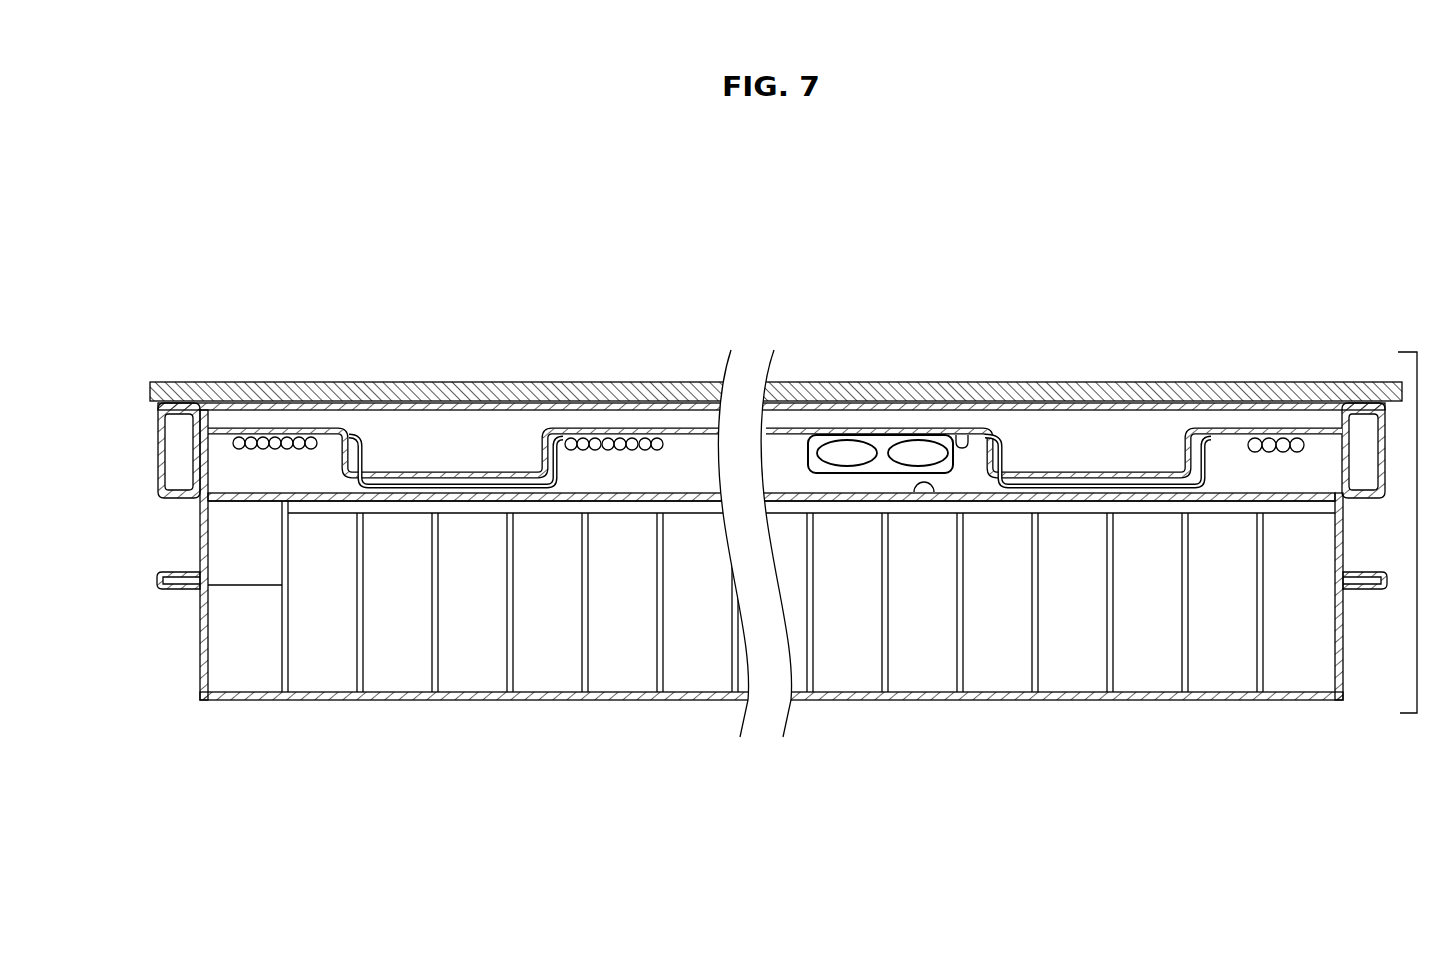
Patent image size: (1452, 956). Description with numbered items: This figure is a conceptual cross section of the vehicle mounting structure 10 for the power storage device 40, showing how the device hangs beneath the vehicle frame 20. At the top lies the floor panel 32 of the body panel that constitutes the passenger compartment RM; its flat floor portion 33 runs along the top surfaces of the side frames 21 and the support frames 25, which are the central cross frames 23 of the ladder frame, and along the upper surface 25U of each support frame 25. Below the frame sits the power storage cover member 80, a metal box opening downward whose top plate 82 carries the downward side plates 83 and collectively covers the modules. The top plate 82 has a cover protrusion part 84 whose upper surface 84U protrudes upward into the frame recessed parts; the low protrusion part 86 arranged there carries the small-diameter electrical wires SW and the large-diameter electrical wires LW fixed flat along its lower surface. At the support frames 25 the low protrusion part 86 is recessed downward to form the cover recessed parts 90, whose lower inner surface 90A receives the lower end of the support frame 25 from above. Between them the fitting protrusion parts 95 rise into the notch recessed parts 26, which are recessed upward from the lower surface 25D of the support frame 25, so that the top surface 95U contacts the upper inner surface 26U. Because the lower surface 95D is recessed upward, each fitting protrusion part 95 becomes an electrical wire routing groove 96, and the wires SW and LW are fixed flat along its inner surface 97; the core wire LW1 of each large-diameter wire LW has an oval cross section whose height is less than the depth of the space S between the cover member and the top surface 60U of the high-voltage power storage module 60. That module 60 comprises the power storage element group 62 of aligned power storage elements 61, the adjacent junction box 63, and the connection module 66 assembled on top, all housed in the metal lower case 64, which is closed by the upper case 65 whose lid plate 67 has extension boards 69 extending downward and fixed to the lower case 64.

The vehicle mounting structure 10 is at (1422, 532).
The vehicle frame 20 is at (139, 457).
The side frame 21 is at (160, 452).
The cross frame 23 is at (731, 368).
The support frame 25 is at (353, 403).
The upper surface of support frame 25U is at (620, 402).
The lower surface of support frame 25D is at (413, 480).
The notch recessed part 26 is at (557, 453).
The upper inner surface of notch recessed part 26U is at (972, 437).
The floor panel 32 is at (776, 345).
The floor portion 33 is at (470, 382).
The power storage device 40 is at (226, 714).
The high-voltage power storage module 60 is at (736, 610).
The top surface of high-voltage power storage module 60U is at (934, 492).
The power storage element 61 is at (1013, 662).
The power storage element group 62 is at (772, 643).
The junction box 63 is at (248, 657).
The lower case 64 is at (1243, 697).
The upper case 65 is at (227, 463).
The connection module 66 is at (842, 508).
The lid plate 67 is at (1222, 493).
The extension board 69 is at (213, 543).
The power storage cover member 80 is at (191, 525).
The top plate 82 is at (693, 430).
The side plate 83 is at (195, 538).
The cover protrusion part 84 is at (830, 334).
The upper surface of cover protrusion part 84U is at (1315, 432).
The low protrusion part 86 is at (790, 403).
The cover recessed part 90 is at (347, 455).
The lower inner surface of cover recessed part 90A is at (1108, 487).
The fitting protrusion part 95 is at (545, 440).
The top surface of fitting protrusion part 95U is at (921, 403).
The lower surface of fitting protrusion part 95D is at (783, 432).
The electrical wire routing groove 96 is at (985, 458).
The inner surface of electrical wire routing groove 97 is at (677, 447).
The space S is at (688, 478).
The passenger compartment RM is at (694, 271).
The small-diameter electrical wire SW is at (270, 436).
The large-diameter electrical wire LW is at (893, 482).
The core wire LW1 is at (843, 453).